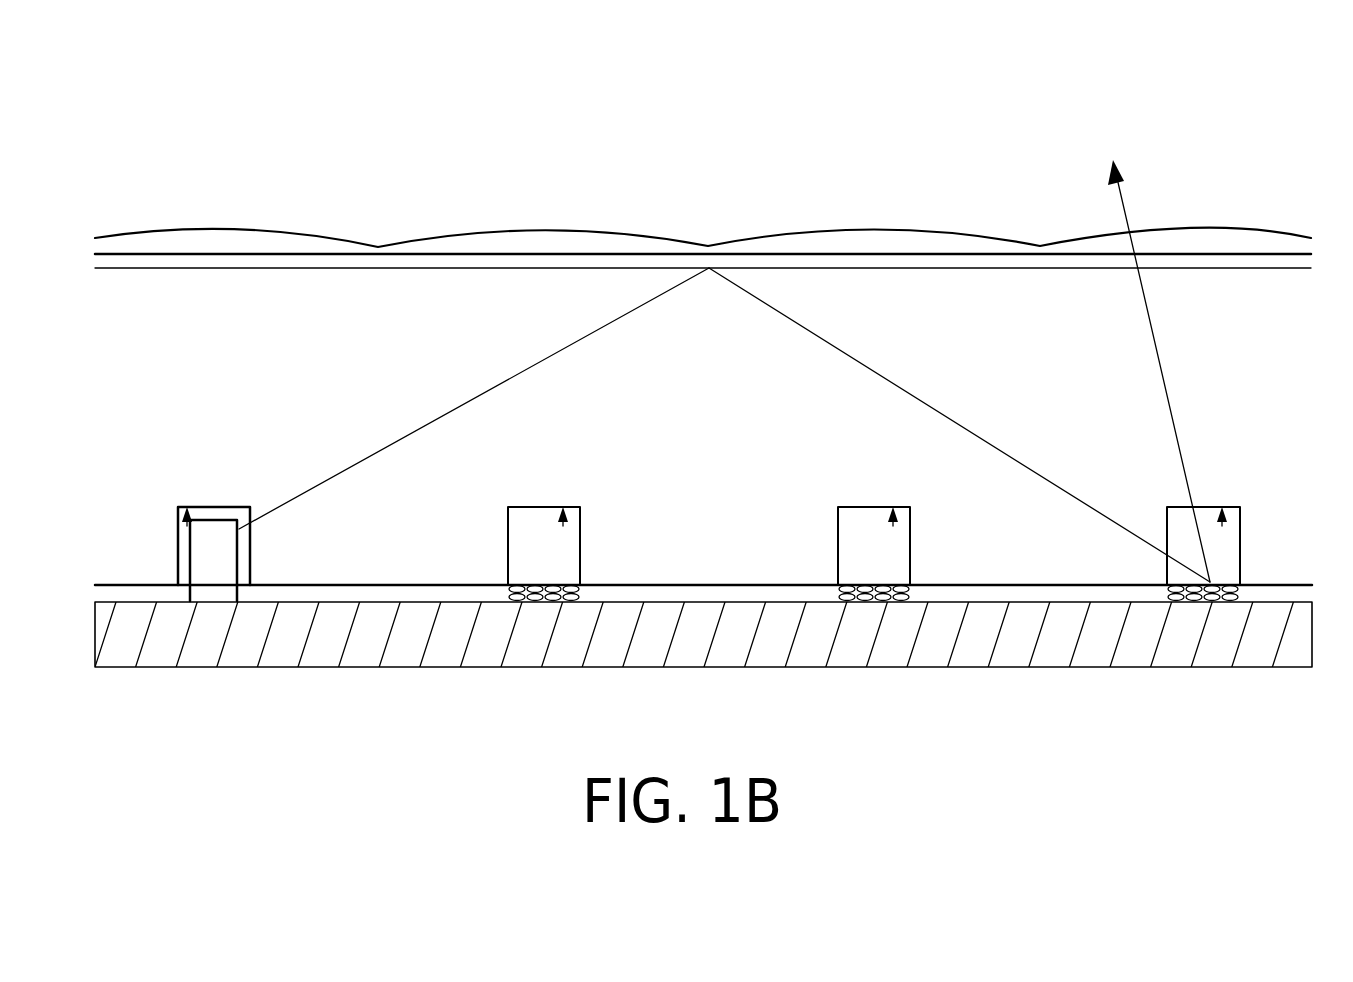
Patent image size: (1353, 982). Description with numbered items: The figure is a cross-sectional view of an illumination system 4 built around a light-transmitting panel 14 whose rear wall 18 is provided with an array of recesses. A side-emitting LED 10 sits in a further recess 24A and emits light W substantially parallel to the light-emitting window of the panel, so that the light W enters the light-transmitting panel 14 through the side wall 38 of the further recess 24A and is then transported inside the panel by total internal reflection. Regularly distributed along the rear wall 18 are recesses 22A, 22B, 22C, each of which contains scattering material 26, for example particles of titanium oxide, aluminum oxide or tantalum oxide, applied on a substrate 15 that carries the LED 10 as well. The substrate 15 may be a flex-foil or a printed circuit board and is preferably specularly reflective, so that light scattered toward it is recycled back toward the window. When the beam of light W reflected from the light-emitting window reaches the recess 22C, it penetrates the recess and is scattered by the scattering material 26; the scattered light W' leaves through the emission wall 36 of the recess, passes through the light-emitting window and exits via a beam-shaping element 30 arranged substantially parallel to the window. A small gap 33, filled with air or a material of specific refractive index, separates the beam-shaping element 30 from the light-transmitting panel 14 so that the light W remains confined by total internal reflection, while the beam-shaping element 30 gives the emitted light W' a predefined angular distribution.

The illumination system 4 is at (683, 126).
The light-transmitting panel 14 is at (179, 290).
The gap 33 is at (303, 258).
The beam-shaping element 30 is at (916, 228).
The light W is at (724, 425).
The scattered light W' is at (1174, 371).
The further recess 24A is at (215, 515).
The side-emitting LED 10 is at (212, 555).
The rear wall 18 is at (378, 572).
The substrate 15 is at (345, 667).
The recess 22A is at (537, 520).
The recess 22B is at (867, 520).
The recess 22C is at (1200, 520).
The scattering material 26 is at (537, 585).
The emission wall 36 is at (187, 526).
The side wall 38 is at (250, 545).